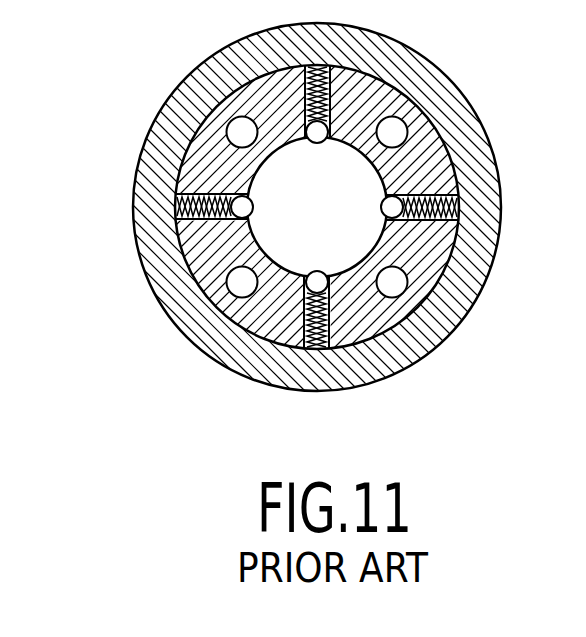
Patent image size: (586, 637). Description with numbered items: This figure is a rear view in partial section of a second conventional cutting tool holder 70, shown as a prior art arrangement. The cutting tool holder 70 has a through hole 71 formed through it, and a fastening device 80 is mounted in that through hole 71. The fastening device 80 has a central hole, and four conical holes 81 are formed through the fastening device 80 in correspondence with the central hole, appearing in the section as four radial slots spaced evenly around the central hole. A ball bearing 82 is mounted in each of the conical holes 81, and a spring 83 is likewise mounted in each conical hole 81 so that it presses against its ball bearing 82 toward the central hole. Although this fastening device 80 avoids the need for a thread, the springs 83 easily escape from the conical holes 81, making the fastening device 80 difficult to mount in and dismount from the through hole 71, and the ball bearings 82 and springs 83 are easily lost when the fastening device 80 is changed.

The cutting tool holder 70 is at (154, 109).
The through hole 71 is at (186, 155).
The fastening device 80 is at (428, 148).
The conical holes 81 is at (457, 205).
The ball bearings 82 is at (387, 209).
The springs 83 is at (443, 220).